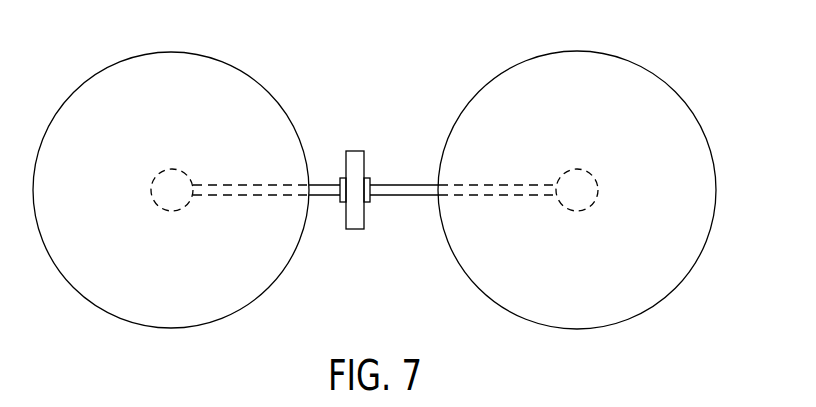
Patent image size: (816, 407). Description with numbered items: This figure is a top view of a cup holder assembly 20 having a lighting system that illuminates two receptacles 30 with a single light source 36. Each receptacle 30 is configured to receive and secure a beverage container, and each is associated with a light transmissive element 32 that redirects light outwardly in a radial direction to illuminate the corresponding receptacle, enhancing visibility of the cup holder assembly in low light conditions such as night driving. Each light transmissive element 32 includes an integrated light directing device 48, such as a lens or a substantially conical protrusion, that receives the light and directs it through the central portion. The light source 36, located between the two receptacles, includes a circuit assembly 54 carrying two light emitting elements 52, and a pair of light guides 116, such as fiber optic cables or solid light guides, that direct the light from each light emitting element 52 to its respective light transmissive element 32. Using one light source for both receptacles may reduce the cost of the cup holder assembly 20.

The cup holder assembly 20 is at (378, 188).
The receptacle 30 is at (378, 164).
The light transmissive element 32 is at (257, 79).
The light source 36 is at (374, 183).
The light directing device 48 is at (176, 168).
The light emitting element 52 is at (340, 178).
The circuit assembly 54 is at (353, 230).
The light guide 116 is at (322, 196).